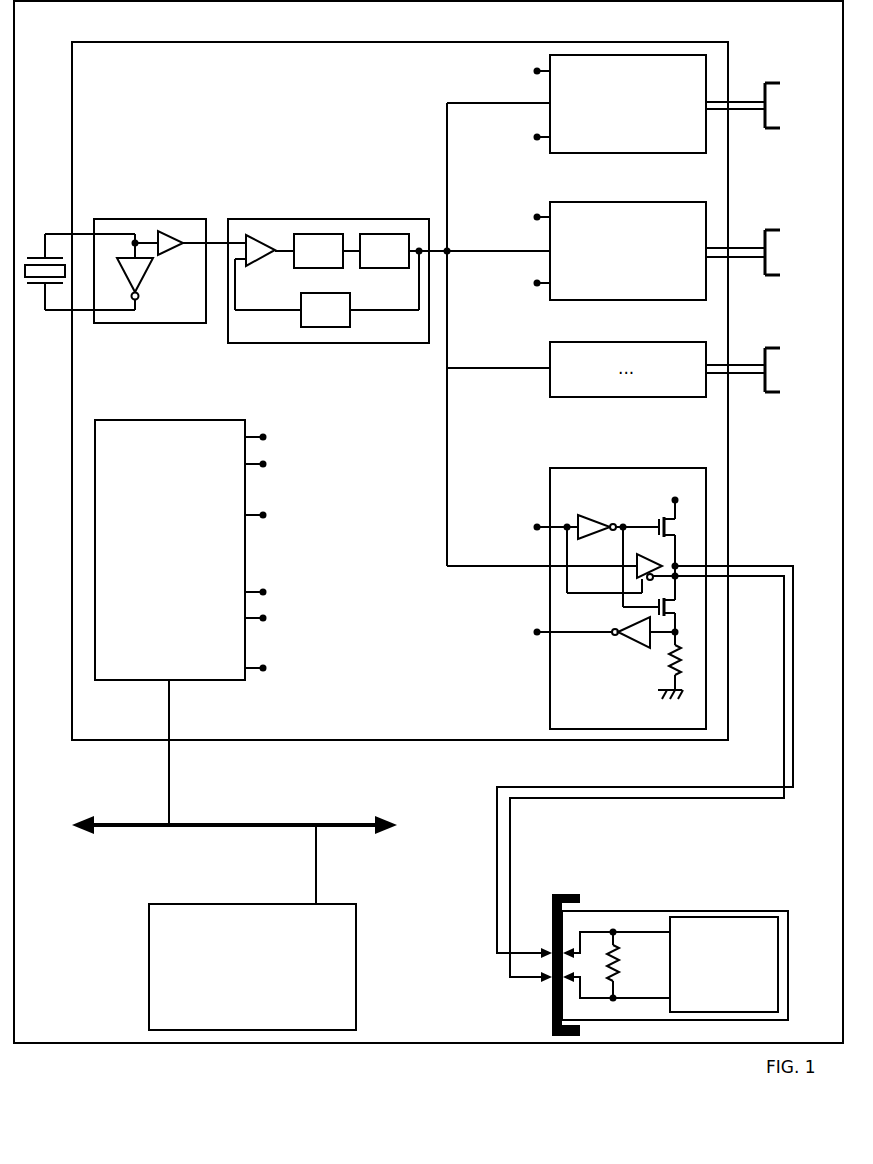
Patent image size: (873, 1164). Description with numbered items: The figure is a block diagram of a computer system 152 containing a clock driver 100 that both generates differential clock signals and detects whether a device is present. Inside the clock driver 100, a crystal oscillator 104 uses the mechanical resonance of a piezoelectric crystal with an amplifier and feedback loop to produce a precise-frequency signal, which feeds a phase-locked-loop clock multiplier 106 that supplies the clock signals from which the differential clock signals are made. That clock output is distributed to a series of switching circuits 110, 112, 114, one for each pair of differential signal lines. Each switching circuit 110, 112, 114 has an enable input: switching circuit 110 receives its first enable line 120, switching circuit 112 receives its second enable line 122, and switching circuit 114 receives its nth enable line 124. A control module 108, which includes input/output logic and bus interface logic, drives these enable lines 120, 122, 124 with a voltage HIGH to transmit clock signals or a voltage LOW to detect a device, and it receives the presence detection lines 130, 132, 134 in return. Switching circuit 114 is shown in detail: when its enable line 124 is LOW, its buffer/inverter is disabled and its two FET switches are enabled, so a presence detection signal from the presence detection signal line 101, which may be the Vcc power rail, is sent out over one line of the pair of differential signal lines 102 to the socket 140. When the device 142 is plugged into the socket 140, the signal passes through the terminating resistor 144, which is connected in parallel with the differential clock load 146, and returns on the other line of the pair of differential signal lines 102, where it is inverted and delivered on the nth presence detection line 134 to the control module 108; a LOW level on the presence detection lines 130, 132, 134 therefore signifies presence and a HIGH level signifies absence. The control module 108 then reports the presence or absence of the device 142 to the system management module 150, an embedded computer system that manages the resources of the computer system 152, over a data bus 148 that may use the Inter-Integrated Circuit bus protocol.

The computer system 152 is at (201, 30).
The clock driver 100 is at (214, 71).
The crystal oscillator 104 is at (199, 213).
The phase-locked-loop clock multiplier 106 is at (382, 213).
The control module 108 is at (217, 571).
The switching circuit 110 is at (642, 138).
The switching circuit 112 is at (642, 285).
The switching circuit 114 is at (612, 722).
The EN[1] signal line 120 is at (330, 448).
The EN[2] signal line 122 is at (330, 475).
The EN[n] signal line 124 is at (330, 526).
The PDL[1] signal line 130 is at (340, 603).
The PDL[2] signal line 132 is at (340, 629).
The PDL[n] signal line 134 is at (340, 679).
The presence detection signal line 101 is at (667, 494).
The pair of differential signal lines 102 is at (749, 552).
The socket 140 is at (565, 891).
The device 142 is at (782, 905).
The terminating resistor 144 is at (652, 986).
The differential clock load 146 is at (739, 996).
The data bus 148 is at (257, 836).
The system management module 150 is at (300, 990).